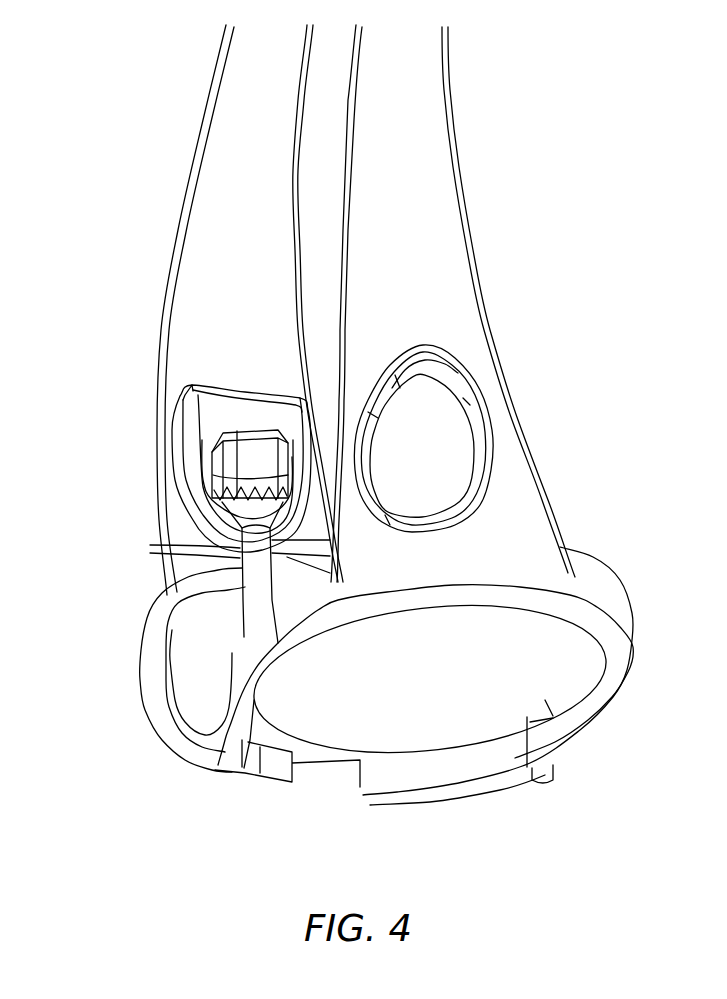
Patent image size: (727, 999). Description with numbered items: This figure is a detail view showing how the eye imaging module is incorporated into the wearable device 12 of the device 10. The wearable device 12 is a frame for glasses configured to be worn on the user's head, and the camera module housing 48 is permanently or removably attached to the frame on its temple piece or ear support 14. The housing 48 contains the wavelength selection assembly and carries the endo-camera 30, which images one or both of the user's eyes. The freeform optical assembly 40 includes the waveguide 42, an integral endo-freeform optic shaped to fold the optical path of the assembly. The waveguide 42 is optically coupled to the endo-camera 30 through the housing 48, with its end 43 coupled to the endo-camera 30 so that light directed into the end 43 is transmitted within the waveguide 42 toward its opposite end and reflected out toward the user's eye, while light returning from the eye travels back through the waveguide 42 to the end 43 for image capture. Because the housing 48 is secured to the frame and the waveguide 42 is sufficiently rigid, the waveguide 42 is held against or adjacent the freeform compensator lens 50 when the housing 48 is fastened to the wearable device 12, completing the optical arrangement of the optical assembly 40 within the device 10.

The device 10 is at (374, 310).
The temple piece or ear support 14 is at (189, 188).
The camera module housing 48 is at (202, 463).
The endo-camera 30 is at (250, 518).
The wearable device 12 is at (185, 536).
The end 43 is at (232, 548).
The freeform optical assembly 40 is at (235, 596).
The waveguide 42 is at (247, 635).
The freeform compensator lens 50 is at (195, 667).